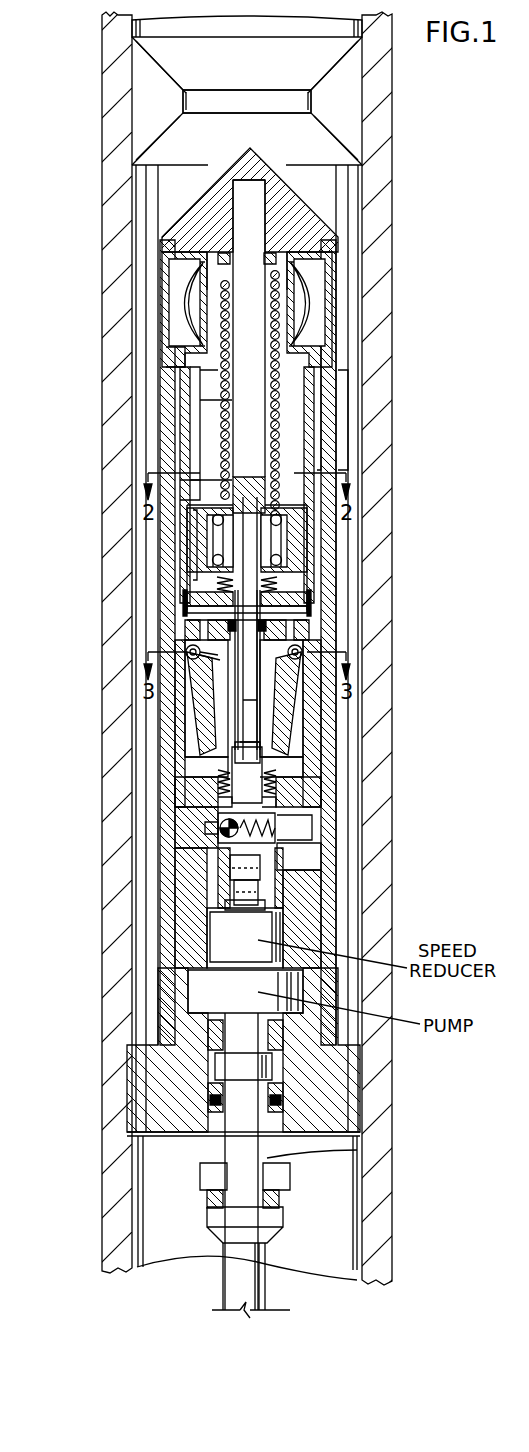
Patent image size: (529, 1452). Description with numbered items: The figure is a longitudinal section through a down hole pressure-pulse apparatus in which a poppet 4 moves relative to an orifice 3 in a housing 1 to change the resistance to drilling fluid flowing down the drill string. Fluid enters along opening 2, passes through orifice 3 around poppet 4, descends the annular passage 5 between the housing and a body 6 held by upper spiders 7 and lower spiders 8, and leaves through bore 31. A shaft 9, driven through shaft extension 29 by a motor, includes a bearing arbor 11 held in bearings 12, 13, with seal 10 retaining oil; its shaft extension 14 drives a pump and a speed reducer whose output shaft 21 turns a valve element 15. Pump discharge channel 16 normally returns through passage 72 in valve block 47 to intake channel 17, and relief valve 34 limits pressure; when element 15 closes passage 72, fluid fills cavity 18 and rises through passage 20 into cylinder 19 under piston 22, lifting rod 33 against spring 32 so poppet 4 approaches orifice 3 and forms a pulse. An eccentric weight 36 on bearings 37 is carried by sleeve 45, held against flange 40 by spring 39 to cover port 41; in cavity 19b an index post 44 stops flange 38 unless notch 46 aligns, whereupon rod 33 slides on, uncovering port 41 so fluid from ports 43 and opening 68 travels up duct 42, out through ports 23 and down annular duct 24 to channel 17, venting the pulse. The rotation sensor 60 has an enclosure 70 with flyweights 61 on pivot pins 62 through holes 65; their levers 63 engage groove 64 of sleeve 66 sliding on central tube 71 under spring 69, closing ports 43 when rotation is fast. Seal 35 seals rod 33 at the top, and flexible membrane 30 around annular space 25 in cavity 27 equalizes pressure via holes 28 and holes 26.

The housing 1 is at (394, 151).
The opening 2 is at (317, 60).
The orifice 3 is at (260, 100).
The poppet 4 is at (283, 163).
The annular passage 5 is at (356, 548).
The body 6 is at (337, 452).
The spiders 7 is at (355, 392).
The spiders 8 is at (345, 1098).
The shaft 9 is at (268, 1160).
The seal 10 is at (210, 1128).
The bearing arbor 11 is at (240, 1068).
The bearing 12 is at (215, 1097).
The bearing 13 is at (215, 1032).
The shaft extension 14 is at (255, 972).
The valve element 15 is at (240, 866).
The channel 16 is at (222, 819).
The channel 17 is at (300, 862).
The cavity 18 is at (240, 770).
The cylinder 19 is at (197, 606).
The cavity 19b is at (188, 455).
The passage 20 is at (195, 626).
The output shaft 21 is at (245, 911).
The piston 22 is at (200, 580).
The ports 23 is at (188, 412).
The annular duct 24 is at (330, 402).
The annular space 25 is at (300, 290).
The holes 26 is at (318, 293).
The cavity 27 is at (200, 273).
The holes 28 is at (164, 347).
The shaft extension 29 is at (255, 1294).
The flexible membrane 30 is at (176, 290).
The bore 31 is at (330, 1256).
The spring 32 is at (282, 427).
The rod 33 is at (238, 393).
The relief valve 34 is at (300, 822).
The seal 35 is at (220, 258).
The eccentric weight 36 is at (300, 546).
The bearings 37 is at (282, 482).
The flange 38 is at (190, 530).
The spring 39 is at (292, 593).
The flange 40 is at (267, 478).
The port 41 is at (225, 500).
The duct 42 is at (295, 716).
The ports 43 is at (318, 763).
The index post 44 is at (203, 440).
The sleeve 45 is at (205, 553).
The notch 46 is at (190, 479).
The valve block 47 is at (300, 922).
The rotation sensor 60 is at (374, 688).
The flyweights 61 is at (210, 722).
The pivot pins 62 is at (190, 648).
The lever 63 is at (300, 625).
The groove 64 is at (303, 651).
The holes 65 is at (195, 676).
The sleeve 66 is at (205, 700).
The opening 68 is at (262, 804).
The spring 69 is at (205, 791).
The enclosure 70 is at (258, 741).
The central tube 71 is at (222, 780).
The passage 72 is at (240, 886).